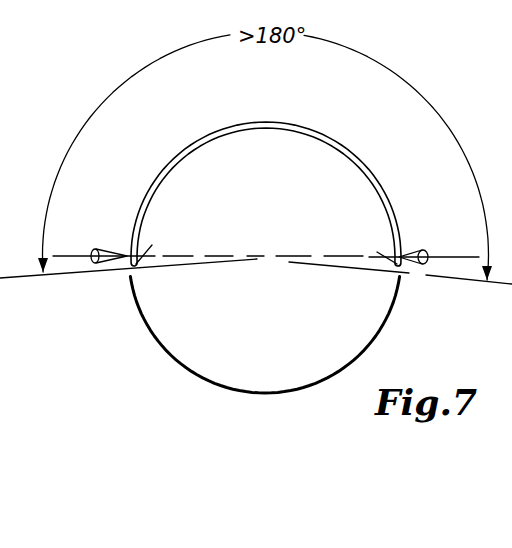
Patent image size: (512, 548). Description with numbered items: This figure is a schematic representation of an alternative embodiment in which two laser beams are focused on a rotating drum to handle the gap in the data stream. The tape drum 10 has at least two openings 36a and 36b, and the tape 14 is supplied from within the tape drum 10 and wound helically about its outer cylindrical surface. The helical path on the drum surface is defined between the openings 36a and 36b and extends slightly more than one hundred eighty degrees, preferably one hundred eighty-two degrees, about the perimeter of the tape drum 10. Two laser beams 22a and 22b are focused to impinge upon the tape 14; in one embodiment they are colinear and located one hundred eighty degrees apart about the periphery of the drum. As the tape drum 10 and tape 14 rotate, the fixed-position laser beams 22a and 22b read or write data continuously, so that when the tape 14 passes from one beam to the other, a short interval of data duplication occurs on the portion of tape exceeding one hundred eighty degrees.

The tape drum 10 is at (195, 377).
The tape 14 is at (308, 127).
The laser beam 22a is at (60, 254).
The laser beam 22b is at (450, 256).
The opening 36a is at (116, 280).
The opening 36b is at (410, 282).